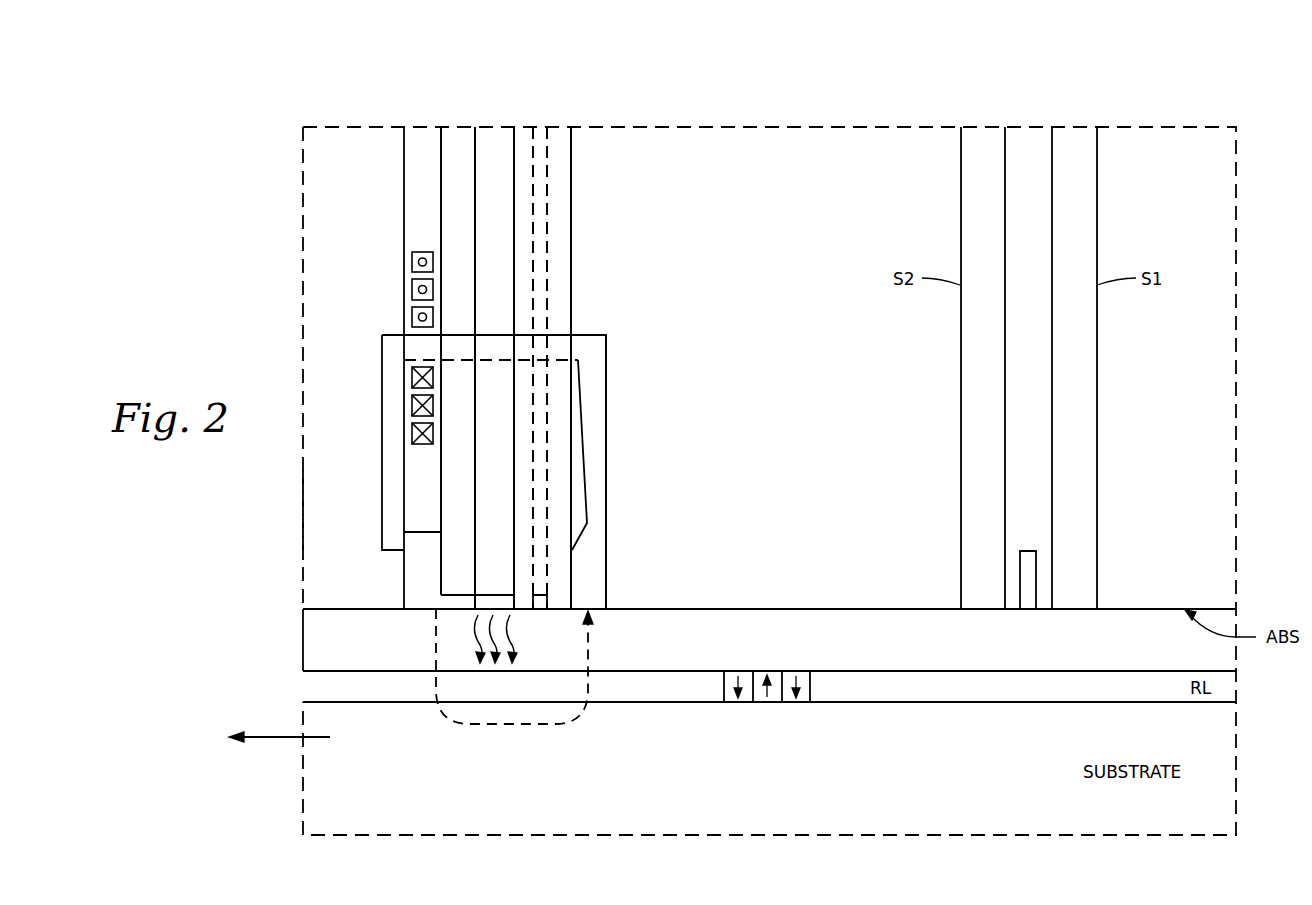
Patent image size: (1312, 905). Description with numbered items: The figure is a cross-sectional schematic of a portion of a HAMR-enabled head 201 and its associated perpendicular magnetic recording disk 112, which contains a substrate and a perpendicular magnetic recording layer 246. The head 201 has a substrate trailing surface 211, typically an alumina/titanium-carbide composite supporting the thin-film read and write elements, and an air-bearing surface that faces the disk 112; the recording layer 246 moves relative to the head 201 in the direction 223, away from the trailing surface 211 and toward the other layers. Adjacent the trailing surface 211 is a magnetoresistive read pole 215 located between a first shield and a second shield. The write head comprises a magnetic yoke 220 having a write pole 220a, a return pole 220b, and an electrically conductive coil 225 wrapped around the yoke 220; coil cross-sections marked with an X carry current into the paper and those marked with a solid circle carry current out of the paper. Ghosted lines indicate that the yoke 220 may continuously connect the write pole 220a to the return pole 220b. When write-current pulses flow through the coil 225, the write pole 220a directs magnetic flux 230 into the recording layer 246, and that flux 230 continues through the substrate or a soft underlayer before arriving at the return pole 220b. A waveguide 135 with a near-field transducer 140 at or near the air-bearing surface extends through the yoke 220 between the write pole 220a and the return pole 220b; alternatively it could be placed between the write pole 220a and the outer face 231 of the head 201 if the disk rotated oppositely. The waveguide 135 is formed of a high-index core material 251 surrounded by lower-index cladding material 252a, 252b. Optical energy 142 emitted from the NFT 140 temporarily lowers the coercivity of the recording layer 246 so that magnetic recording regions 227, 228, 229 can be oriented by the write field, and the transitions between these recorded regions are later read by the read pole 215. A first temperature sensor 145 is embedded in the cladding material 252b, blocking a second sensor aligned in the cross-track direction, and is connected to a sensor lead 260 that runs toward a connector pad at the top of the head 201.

The head 201 is at (285, 135).
The perpendicular magnetic recording disk 112 is at (310, 809).
The perpendicular magnetic recording layer 246 is at (313, 688).
The outer face 231 is at (313, 518).
The direction 223 is at (268, 740).
The substrate trailing surface 211 is at (1096, 161).
The magnetoresistive read pole 215 is at (1026, 565).
The magnetic recording region 228 is at (730, 704).
The magnetic recording region 227 is at (760, 704).
The magnetic recording region 229 is at (800, 704).
The magnetic flux 230 is at (505, 727).
The waveguide 135 is at (572, 46).
The core material 251 is at (490, 132).
The sensor lead 260 is at (539, 132).
The cladding material 252a is at (457, 128).
The cladding material 252b is at (523, 128).
The first temperature sensor 145 is at (538, 610).
The NFT 140 is at (495, 603).
The optical energy 142 is at (472, 642).
The magnetic yoke 220 is at (382, 348).
The write pole 220a is at (404, 600).
The return pole 220b is at (607, 577).
The electrically conductive coil 225 is at (396, 252).